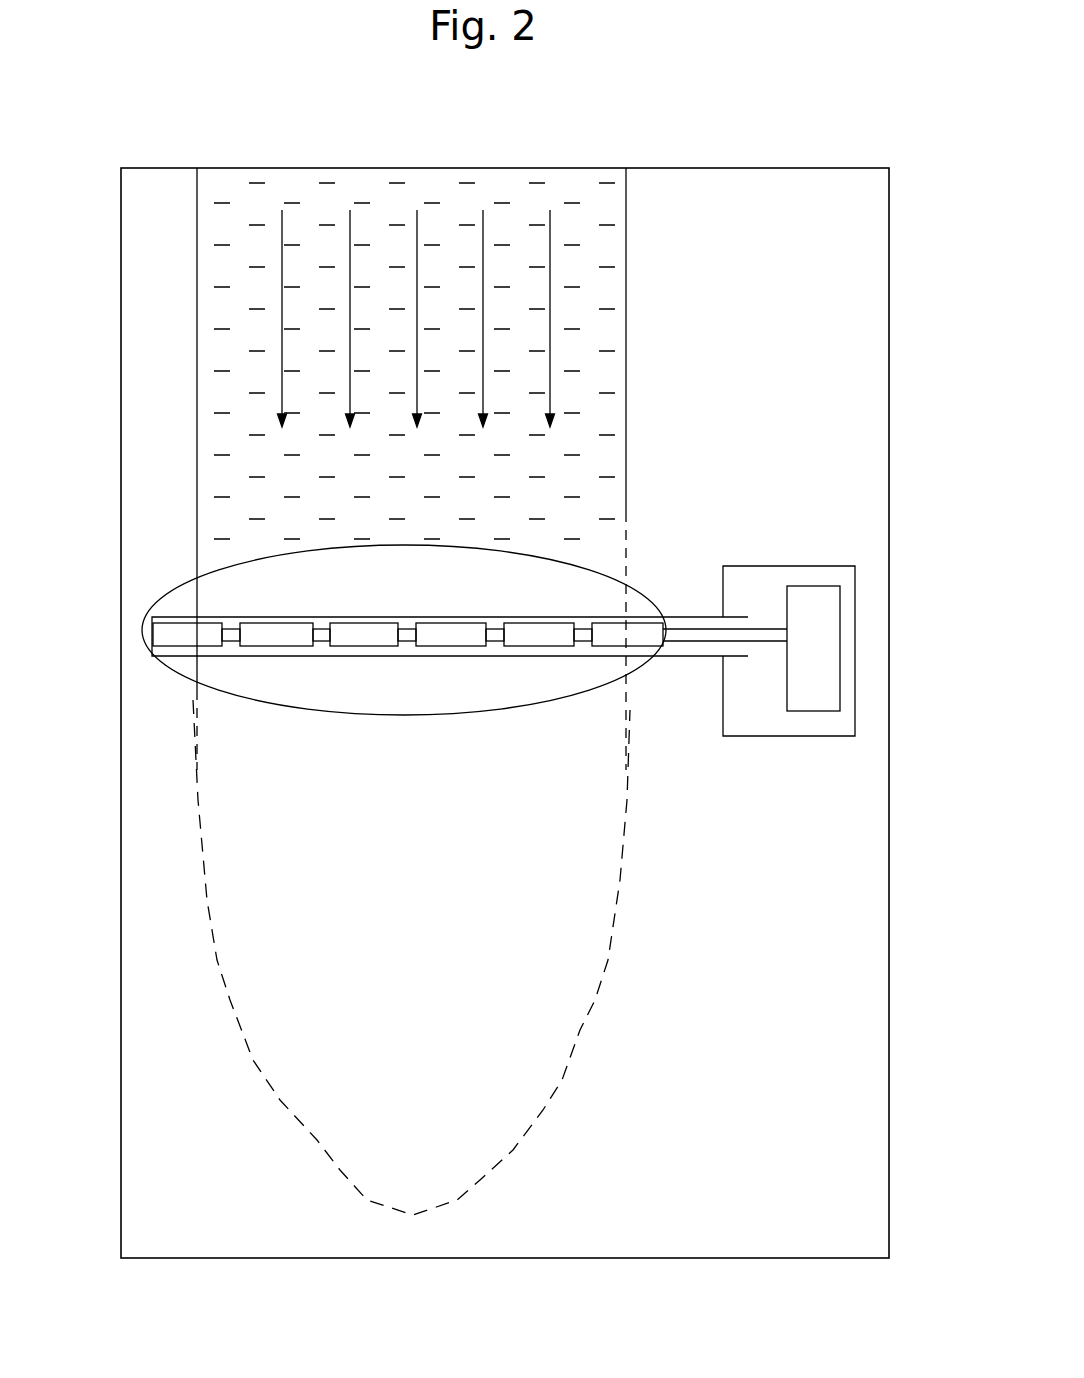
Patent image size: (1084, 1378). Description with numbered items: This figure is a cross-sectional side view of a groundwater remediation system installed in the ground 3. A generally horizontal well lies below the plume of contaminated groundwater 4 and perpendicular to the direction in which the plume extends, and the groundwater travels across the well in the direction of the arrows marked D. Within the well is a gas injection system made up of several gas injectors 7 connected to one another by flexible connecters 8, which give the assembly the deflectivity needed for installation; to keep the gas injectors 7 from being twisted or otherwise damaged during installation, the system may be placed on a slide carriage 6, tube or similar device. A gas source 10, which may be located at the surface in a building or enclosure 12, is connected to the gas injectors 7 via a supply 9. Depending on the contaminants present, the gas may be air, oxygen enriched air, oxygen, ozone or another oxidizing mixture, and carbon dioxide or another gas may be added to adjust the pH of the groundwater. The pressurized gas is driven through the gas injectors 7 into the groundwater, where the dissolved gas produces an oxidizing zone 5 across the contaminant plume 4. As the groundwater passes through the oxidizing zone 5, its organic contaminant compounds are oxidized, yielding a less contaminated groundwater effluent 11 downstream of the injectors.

The ground 3 is at (714, 217).
The plume of contaminated groundwater 4 is at (263, 208).
The oxidizing zone 5 is at (525, 698).
The slide carriage 6 is at (168, 606).
The gas injectors 7 is at (200, 657).
The flexible connecters 8 is at (243, 610).
The supply 9 is at (695, 614).
The gas source 10 is at (854, 646).
The less contaminated groundwater effluent 11 is at (238, 927).
The building or enclosure 12 is at (869, 710).